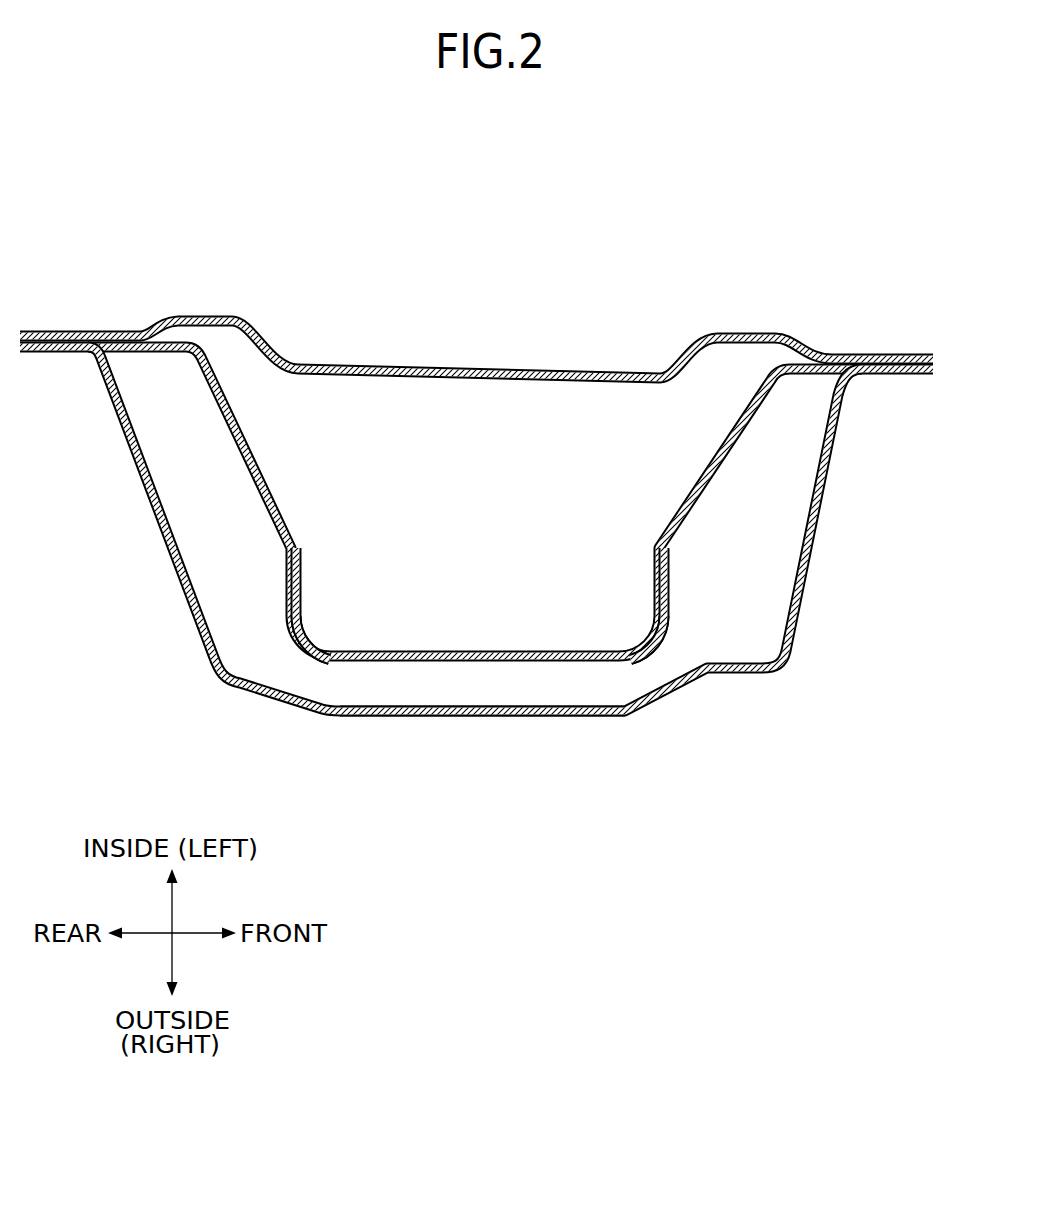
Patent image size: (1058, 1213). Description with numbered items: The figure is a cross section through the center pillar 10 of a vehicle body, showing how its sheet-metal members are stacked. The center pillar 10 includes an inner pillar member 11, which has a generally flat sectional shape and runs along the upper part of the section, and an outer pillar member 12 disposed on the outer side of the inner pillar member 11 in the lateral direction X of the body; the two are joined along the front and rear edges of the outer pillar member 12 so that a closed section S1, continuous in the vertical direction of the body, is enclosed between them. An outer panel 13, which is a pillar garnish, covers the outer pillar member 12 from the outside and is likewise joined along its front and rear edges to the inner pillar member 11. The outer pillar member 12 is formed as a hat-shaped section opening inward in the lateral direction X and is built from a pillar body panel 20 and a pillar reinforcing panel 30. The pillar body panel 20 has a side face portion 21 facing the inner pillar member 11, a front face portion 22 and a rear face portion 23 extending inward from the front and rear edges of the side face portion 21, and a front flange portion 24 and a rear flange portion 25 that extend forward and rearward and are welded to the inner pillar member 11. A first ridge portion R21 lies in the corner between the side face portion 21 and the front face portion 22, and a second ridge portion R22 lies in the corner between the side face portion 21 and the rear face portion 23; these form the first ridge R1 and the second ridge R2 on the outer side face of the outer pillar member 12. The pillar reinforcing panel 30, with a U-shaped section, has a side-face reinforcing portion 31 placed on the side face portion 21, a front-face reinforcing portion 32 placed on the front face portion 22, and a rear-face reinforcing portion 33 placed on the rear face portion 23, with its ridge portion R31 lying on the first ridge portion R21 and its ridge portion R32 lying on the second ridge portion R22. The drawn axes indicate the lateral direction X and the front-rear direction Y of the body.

The center pillar 10 is at (779, 209).
The inner pillar member 11 is at (500, 365).
The outer pillar member 12 is at (880, 517).
The outer panel 13 is at (553, 718).
The pillar body panel 20 is at (693, 504).
The side face portion 21 is at (447, 650).
The front face portion 22 is at (652, 567).
The rear face portion 23 is at (303, 567).
The front flange portion 24 is at (830, 373).
The rear flange portion 25 is at (123, 352).
The pillar reinforcing panel 30 is at (670, 584).
The side-face reinforcing portion 31 is at (437, 665).
The front-face reinforcing portion 32 is at (669, 560).
The rear-face reinforcing portion 33 is at (285, 582).
The first ridge R1 is at (658, 642).
The second ridge R2 is at (297, 642).
The first ridge portion R21 is at (637, 633).
The second ridge portion R22 is at (313, 637).
The ridge portion R31 is at (653, 639).
The ridge portion R32 is at (295, 659).
The closed section S1 is at (507, 510).
The lateral direction X is at (177, 952).
The vehicle width direction Y is at (140, 935).